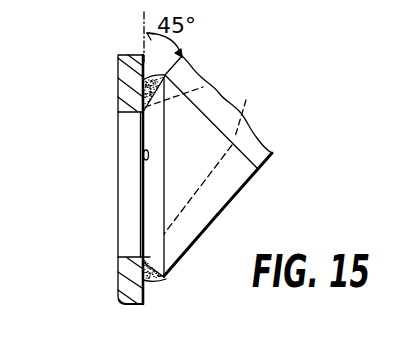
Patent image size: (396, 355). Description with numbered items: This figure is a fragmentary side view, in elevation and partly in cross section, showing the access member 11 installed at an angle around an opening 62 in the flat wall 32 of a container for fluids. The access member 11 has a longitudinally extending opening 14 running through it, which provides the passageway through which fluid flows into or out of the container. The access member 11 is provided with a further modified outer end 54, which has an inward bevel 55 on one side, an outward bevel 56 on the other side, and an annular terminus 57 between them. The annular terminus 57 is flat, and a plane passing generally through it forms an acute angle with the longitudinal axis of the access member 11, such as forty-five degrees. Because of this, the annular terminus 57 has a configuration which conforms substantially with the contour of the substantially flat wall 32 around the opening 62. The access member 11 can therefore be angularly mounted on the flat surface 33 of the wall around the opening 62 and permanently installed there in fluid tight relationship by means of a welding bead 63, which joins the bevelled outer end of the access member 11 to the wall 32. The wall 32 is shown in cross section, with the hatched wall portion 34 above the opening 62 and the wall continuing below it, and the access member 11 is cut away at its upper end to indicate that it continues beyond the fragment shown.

The access member 11 is at (185, 75).
The longitudinally extending opening 14 is at (247, 106).
The flat wall 32 is at (136, 292).
The flat surface 33 is at (147, 165).
The upper wall portion 34 is at (118, 80).
The modified outer end 54 is at (272, 157).
The inward bevel 55 is at (233, 197).
The outward bevel 56 is at (198, 186).
The annular terminus 57 is at (145, 203).
The opening 62 is at (130, 258).
The welding bead 63 is at (166, 279).